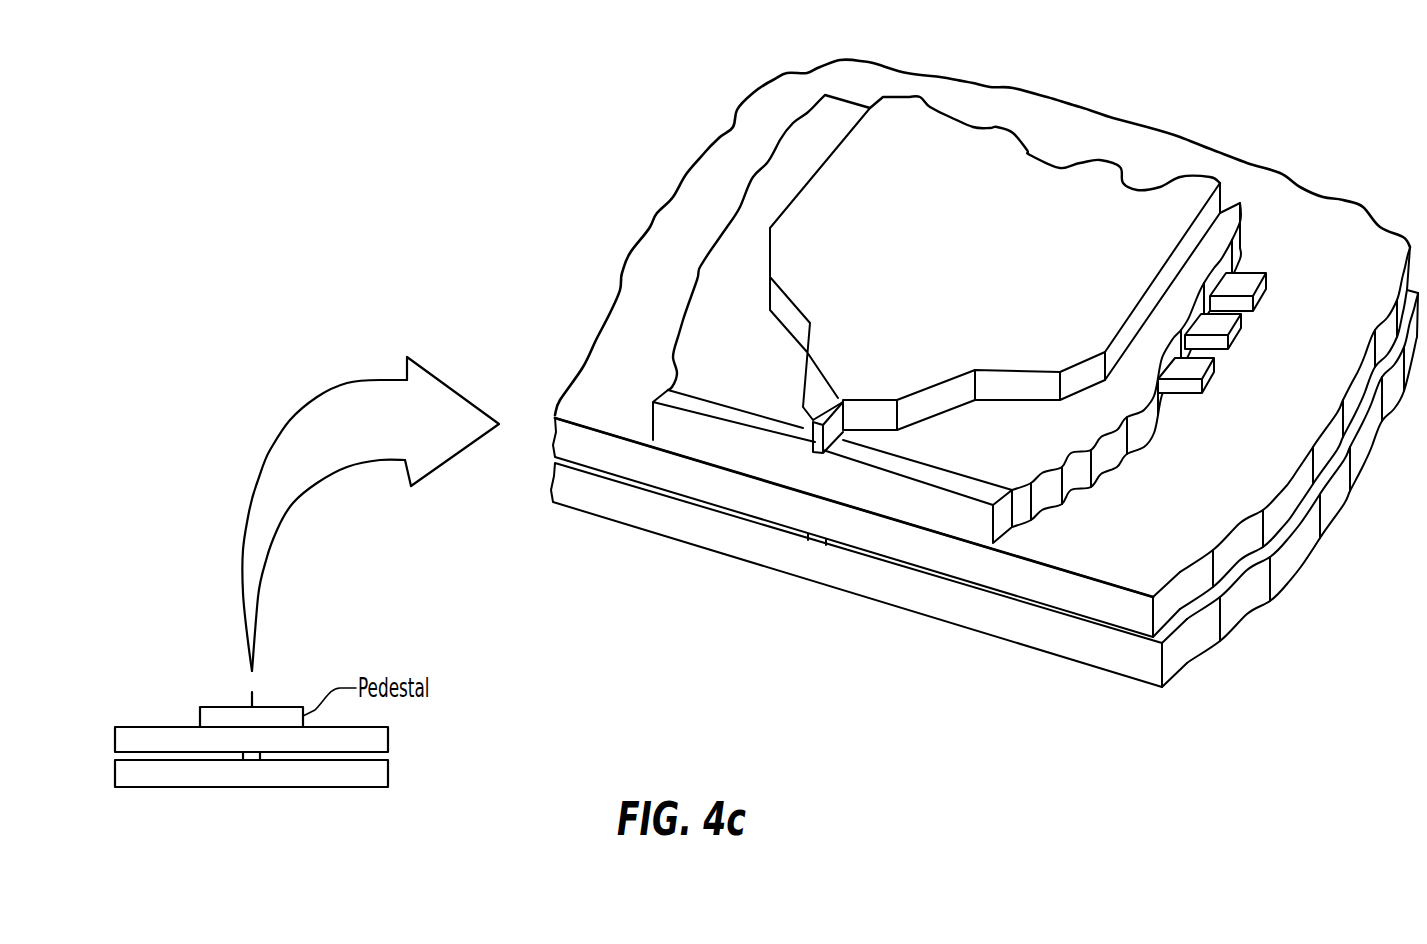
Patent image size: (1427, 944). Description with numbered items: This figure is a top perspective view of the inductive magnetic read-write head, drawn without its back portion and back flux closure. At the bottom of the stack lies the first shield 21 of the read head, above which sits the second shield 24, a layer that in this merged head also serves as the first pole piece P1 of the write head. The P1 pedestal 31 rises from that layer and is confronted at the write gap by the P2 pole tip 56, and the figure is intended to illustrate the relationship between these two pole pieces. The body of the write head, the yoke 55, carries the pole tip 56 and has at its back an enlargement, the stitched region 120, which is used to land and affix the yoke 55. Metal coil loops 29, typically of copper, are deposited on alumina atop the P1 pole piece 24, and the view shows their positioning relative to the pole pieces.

The first shield 21 is at (1058, 633).
The second shield 24 is at (1362, 231).
The metal coil loops 29 is at (1249, 280).
The P1 pedestal 31 is at (947, 515).
The yoke 55 is at (946, 301).
The P2 pole tip 56 is at (813, 445).
The stitched region 120 is at (840, 386).